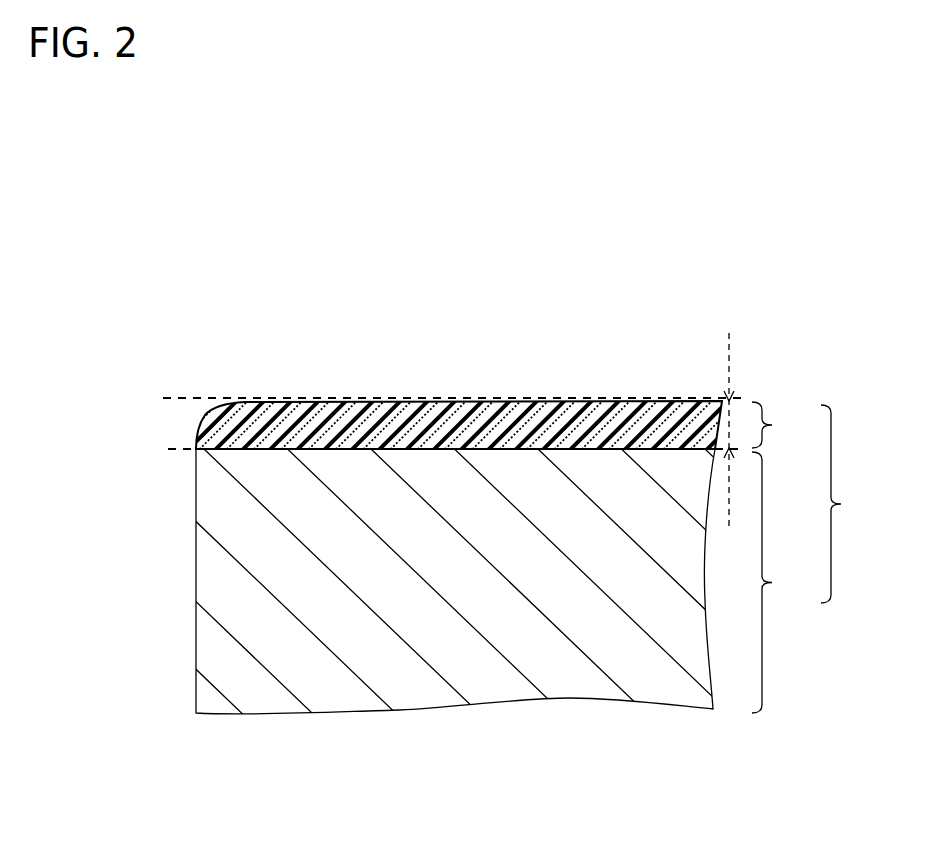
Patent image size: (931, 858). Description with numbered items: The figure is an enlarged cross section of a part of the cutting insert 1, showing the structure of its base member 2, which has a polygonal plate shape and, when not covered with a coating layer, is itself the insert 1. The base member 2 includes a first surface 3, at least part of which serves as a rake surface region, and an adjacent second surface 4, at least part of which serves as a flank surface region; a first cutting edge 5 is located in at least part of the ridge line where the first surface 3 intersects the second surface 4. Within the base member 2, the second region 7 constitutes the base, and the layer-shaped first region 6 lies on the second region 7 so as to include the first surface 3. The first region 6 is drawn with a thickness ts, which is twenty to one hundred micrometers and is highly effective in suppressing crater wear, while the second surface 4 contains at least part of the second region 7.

The cutting insert 1 is at (380, 329).
The base member 2 is at (846, 504).
The first surface 3 is at (597, 400).
The second surface 4 is at (196, 585).
The first cutting edge 5 is at (197, 426).
The first region 6 is at (775, 425).
The second region 7 is at (775, 582).
The coating thickness ts is at (746, 430).